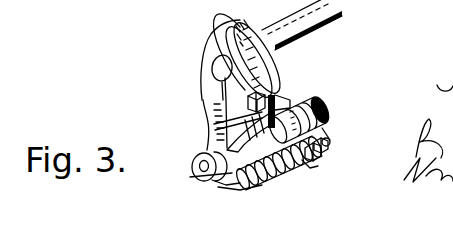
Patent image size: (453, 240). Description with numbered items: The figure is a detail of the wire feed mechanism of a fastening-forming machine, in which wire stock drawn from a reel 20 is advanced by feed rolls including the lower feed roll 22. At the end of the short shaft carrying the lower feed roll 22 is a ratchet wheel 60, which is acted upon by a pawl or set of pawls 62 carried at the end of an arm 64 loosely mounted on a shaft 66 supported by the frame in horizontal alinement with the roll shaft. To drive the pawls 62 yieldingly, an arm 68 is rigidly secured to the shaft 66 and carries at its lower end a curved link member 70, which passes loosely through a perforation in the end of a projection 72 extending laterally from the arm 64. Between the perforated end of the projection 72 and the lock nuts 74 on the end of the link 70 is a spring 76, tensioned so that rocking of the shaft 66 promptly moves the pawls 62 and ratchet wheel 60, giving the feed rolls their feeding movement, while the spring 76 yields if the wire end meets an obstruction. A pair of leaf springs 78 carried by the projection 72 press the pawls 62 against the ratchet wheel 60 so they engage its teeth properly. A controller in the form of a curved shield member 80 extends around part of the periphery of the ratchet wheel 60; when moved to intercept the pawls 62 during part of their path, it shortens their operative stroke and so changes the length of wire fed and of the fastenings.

The reel 20 is at (197, 6).
The lower feed roll 22 is at (42, 5).
The ratchet wheel 60 is at (213, 126).
The pawls 62 is at (284, 182).
The arm 64 is at (300, 94).
The shaft 66 is at (333, 6).
The arm 68 is at (213, 90).
The curved link member 70 is at (196, 170).
The projection 72 is at (212, 178).
The lock nuts 74 is at (330, 160).
The spring 76 is at (307, 182).
The leaf springs 78 is at (322, 112).
The curved shield member 80 is at (300, 98).